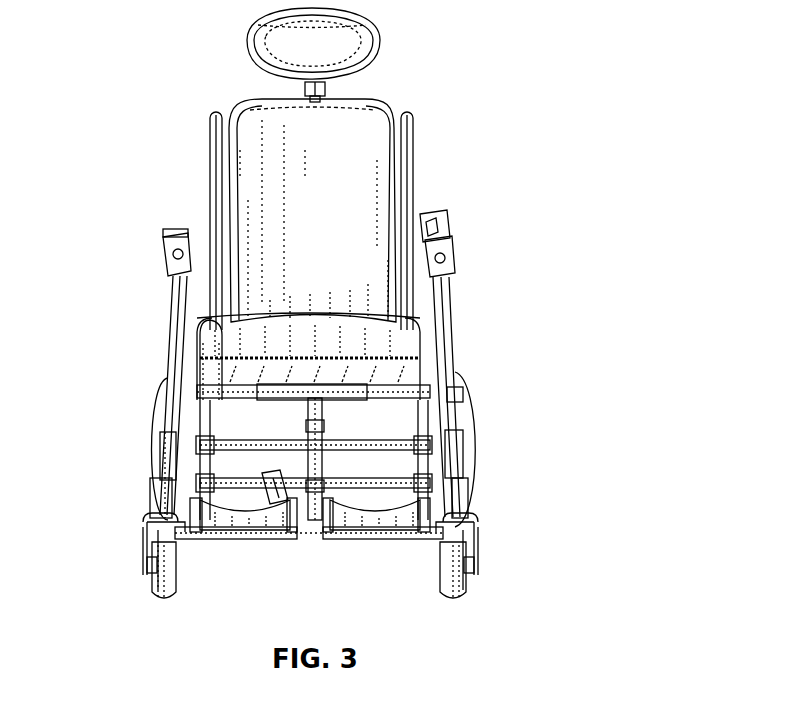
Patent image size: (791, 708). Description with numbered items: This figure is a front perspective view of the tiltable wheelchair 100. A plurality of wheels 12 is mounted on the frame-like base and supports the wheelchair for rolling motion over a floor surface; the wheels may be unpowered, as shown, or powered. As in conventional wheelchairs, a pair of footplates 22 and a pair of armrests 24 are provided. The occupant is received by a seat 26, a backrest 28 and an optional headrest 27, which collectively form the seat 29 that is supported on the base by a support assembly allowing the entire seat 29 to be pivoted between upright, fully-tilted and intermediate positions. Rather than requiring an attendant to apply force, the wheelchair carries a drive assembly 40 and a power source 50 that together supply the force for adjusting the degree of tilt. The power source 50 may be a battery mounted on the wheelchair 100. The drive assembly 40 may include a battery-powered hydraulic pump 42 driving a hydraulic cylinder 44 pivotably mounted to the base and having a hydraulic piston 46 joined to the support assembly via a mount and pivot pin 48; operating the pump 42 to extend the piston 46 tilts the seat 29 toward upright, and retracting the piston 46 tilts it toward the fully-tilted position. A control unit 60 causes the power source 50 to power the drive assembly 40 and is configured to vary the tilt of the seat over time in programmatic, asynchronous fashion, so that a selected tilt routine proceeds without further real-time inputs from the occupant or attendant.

The wheelchair 100 is at (461, 16).
The headrest 27 is at (272, 38).
The backrest 28 is at (378, 115).
The seat 29 is at (440, 156).
The armrests 24 is at (168, 240).
The control unit 60 is at (448, 220).
The seat 26 is at (210, 325).
The mount and pivot pin 48 is at (312, 408).
The hydraulic piston 46 is at (296, 430).
The hydraulic cylinder 44 is at (348, 490).
The hydraulic pump 42 is at (278, 490).
The footplates 22 is at (250, 520).
The power source 50 is at (155, 503).
The drive assembly 40 is at (492, 552).
The wheels 12 is at (158, 600).